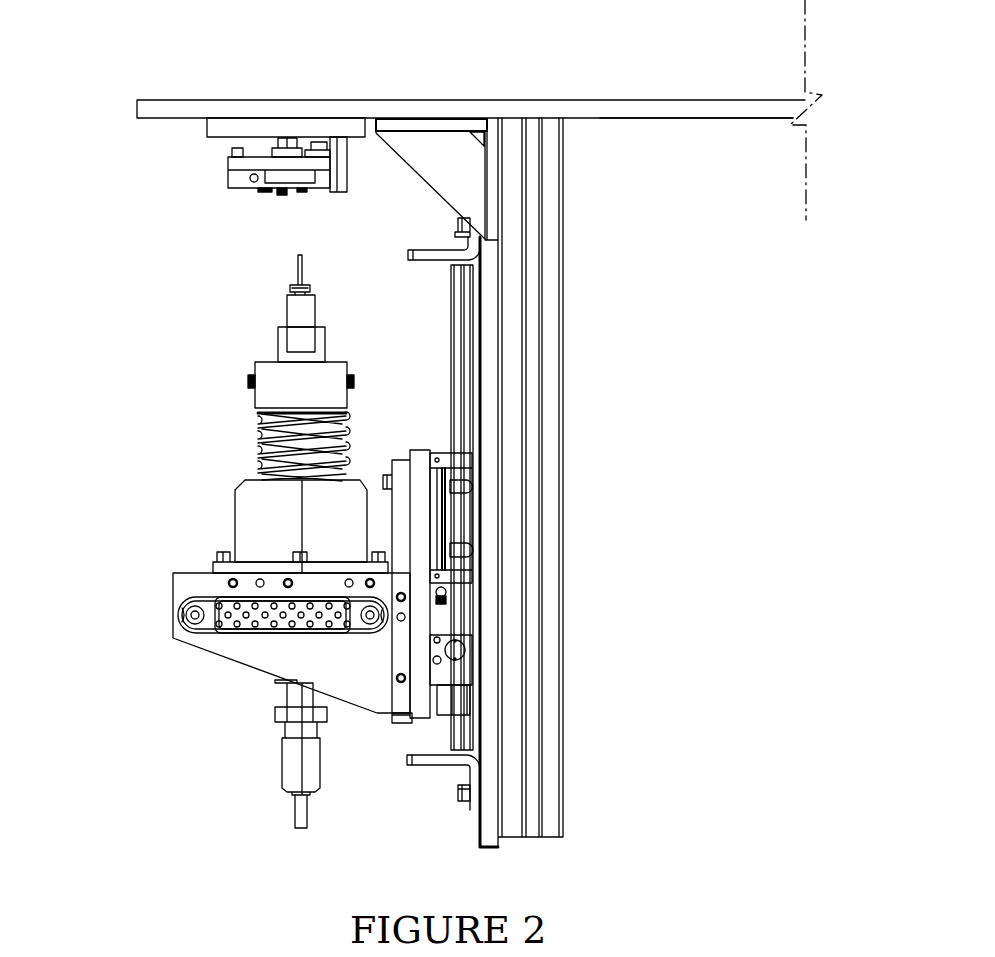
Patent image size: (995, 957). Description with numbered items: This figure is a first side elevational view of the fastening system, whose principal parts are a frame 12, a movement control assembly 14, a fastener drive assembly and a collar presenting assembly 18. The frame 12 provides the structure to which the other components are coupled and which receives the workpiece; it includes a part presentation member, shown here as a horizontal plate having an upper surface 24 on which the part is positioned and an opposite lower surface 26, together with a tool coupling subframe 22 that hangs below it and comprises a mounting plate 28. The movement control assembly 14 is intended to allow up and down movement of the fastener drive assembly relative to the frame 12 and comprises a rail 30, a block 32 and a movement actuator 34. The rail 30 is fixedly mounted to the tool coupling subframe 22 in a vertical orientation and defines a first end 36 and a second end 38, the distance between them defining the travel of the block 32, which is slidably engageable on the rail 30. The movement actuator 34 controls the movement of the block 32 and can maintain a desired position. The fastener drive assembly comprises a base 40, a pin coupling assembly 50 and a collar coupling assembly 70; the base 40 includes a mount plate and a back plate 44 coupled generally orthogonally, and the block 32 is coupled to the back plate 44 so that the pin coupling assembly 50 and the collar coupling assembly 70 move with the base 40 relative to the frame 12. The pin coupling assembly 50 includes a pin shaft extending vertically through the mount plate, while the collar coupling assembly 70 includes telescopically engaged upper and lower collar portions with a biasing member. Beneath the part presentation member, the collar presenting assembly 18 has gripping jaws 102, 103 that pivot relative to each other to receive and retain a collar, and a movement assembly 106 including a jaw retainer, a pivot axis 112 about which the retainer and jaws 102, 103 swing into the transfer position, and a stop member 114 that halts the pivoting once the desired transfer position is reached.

The frame 12 is at (456, 92).
The movement control assembly 14 is at (481, 330).
The collar presenting assembly 18 is at (281, 143).
The tool coupling subframe 22 is at (567, 306).
The upper surface 24 is at (690, 98).
The lower surface 26 is at (680, 121).
The mounting plate 28 is at (482, 700).
The rail 30 is at (470, 376).
The block 32 is at (453, 512).
The movement actuator 34 is at (470, 658).
The first end 36 is at (470, 264).
The second end 38 is at (457, 757).
The base 40 is at (158, 607).
The back plate 44 is at (420, 594).
The pin coupling assembly 50 is at (293, 274).
The collar coupling assembly 70 is at (240, 413).
The gripping jaw 102 is at (224, 215).
The gripping jaw 103 is at (292, 196).
The movement assembly 106 is at (247, 160).
The pivot axis 112 is at (290, 138).
The stop member 114 is at (348, 178).